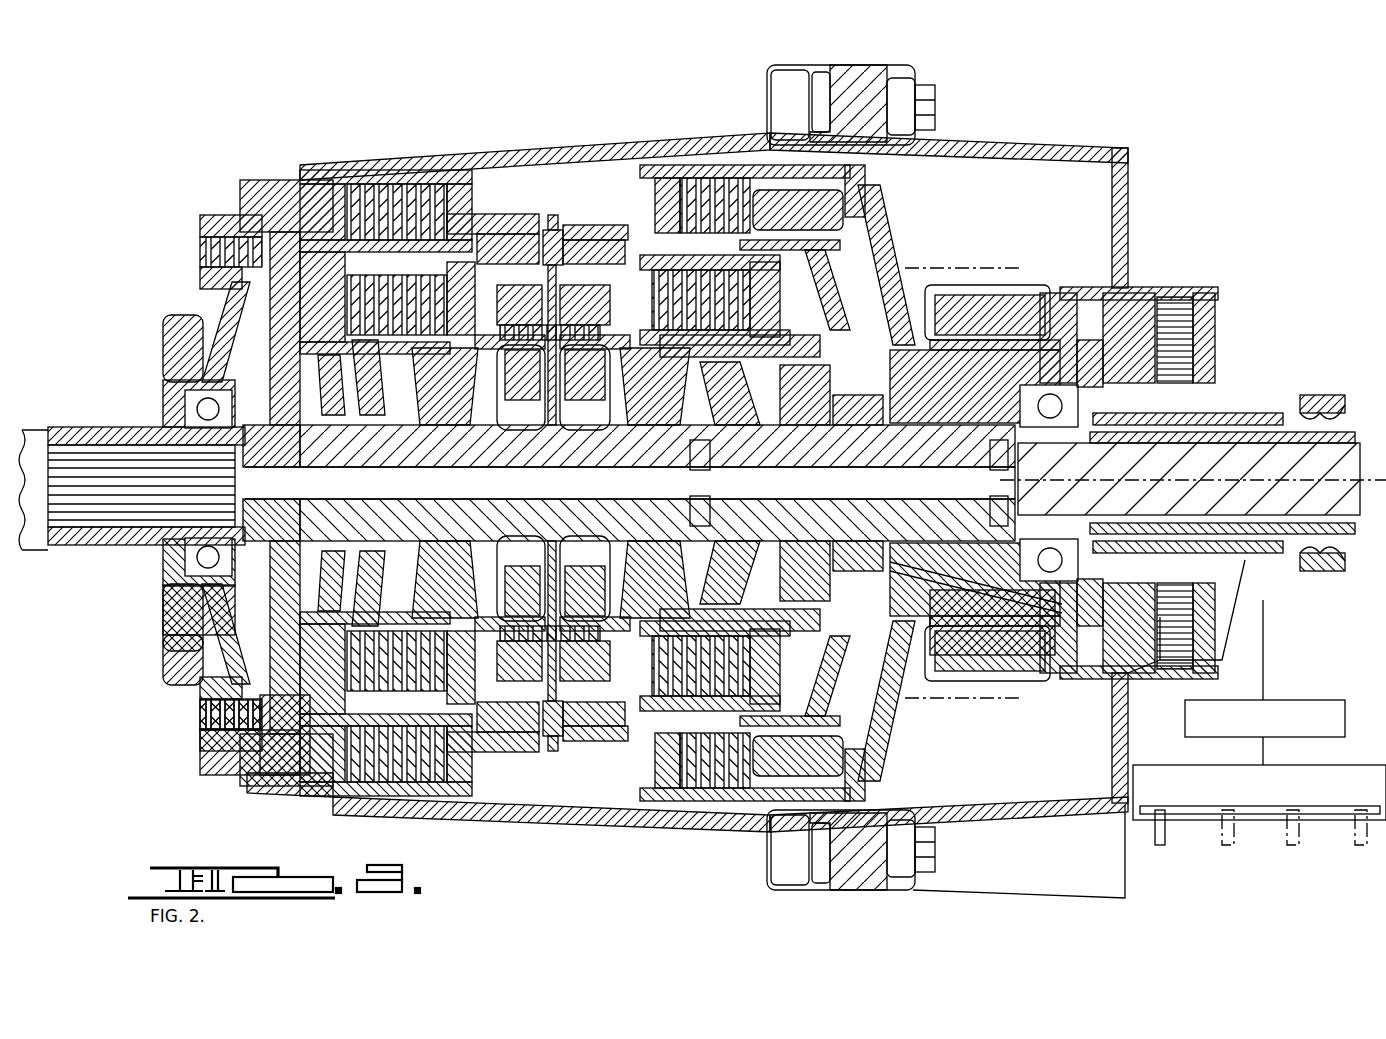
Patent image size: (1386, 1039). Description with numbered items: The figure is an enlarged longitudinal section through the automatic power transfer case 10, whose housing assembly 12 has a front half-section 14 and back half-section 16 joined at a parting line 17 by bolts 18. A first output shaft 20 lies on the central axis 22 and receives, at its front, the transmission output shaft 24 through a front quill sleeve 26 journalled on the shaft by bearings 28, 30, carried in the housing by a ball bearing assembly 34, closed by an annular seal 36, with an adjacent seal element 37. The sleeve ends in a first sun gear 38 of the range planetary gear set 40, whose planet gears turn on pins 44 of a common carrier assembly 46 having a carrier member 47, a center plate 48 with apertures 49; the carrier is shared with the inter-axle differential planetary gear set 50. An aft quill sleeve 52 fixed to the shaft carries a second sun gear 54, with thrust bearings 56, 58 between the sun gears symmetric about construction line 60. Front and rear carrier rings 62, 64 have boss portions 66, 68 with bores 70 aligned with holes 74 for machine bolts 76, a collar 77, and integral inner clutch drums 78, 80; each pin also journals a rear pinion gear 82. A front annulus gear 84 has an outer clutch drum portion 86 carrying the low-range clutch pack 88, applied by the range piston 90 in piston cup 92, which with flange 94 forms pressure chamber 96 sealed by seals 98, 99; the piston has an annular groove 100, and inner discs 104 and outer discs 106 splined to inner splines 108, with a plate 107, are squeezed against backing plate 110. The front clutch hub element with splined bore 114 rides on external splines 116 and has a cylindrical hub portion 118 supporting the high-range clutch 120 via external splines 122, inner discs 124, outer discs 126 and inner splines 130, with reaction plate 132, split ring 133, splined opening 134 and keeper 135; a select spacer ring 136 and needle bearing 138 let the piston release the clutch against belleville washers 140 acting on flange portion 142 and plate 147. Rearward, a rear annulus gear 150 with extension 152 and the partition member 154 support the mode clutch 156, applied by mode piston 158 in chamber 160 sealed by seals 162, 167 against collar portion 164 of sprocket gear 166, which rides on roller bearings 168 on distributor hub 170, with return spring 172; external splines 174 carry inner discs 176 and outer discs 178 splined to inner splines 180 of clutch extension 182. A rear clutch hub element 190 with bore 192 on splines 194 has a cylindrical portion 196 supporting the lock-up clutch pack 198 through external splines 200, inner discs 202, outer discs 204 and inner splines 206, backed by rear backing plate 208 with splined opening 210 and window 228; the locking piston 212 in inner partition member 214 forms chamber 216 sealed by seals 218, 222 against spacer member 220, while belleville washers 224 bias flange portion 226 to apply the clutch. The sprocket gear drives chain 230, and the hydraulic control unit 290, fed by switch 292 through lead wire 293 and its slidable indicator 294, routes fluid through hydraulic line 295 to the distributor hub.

The automatic power transfer case 10 is at (690, 72).
The housing assembly 12 is at (626, 128).
The front half-section 14 is at (470, 160).
The back half-section 16 is at (1033, 150).
The parting line 17 is at (862, 70).
The bolts 18 is at (935, 90).
The first output shaft 20 is at (1340, 448).
The central axis 22 is at (1345, 540).
The transmission output shaft 24 is at (40, 425).
The front quill sleeve 26 is at (82, 430).
The bearing 28 is at (323, 483).
The bearing 30 is at (505, 483).
The ball bearing assembly 34 is at (210, 372).
The annular seal 36 is at (185, 401).
The seal 37 is at (180, 330).
The first sun gear 38 is at (527, 393).
The front high-low range planetary helical gear set 40 is at (546, 764).
The pin 44 is at (580, 722).
The carrier assembly 46 is at (560, 732).
The actuator sleeve 47 is at (512, 740).
The center plate 48 is at (545, 640).
The apertures 49 is at (520, 668).
The second inter-axle differential planetary gear set 50 is at (614, 756).
The aft quill sleeve 52 is at (622, 483).
The second sun gear 54 is at (573, 393).
The thrust bearing 56 is at (537, 483).
The thrust bearing 58 is at (573, 483).
The dashed construction line 60 is at (535, 836).
The front carrier ring 62 is at (506, 462).
The rear carrier ring 64 is at (591, 462).
The boss portions 66 is at (475, 330).
The boss portions 68 is at (627, 327).
The bores 70 is at (498, 300).
The holes 74 is at (582, 310).
The machine bolts 76 is at (628, 297).
The collar 77 is at (583, 290).
The inner clutch drum 78 is at (300, 276).
The inner clutch drum 80 is at (752, 290).
The rear pinion gear 82 is at (600, 700).
The front annulus gear 84 is at (560, 222).
The outer clutch drum portion 86 is at (205, 250).
The low-range wet clutch pack 88 is at (549, 218).
The high/low range piston 90 is at (340, 182).
The piston cup 92 is at (248, 200).
The inner annular housing flange 94 is at (245, 408).
The range hydraulic pressure chamber 96 is at (195, 308).
The range piston outer annular seal 98 is at (282, 185).
The inner annular seal 99 is at (200, 340).
The annular groove 100 is at (306, 200).
The inner clutch discs 104 is at (470, 184).
The outer companion clutch discs 106 is at (378, 180).
The plate 107 is at (479, 225).
The inner splines 108 is at (425, 165).
The backing plate 110 is at (465, 196).
The central internally splined bore 114 is at (369, 483).
The external splines 116 is at (402, 483).
The cylindrical hub portion 118 is at (360, 300).
The high range clutch means 120 is at (225, 300).
The external splines 122 is at (228, 560).
The inner discs 124 is at (300, 640).
The outer companion discs 126 is at (512, 705).
The inner splines 130 is at (450, 732).
The front clutch reaction pressure plate 132 is at (282, 420).
The split ring 133 is at (125, 510).
The central internally splined opening 134 is at (320, 440).
The split ring keeper 135 is at (172, 600).
The select spacer ring 136 is at (215, 650).
The needle bearing assembly 138 is at (222, 665).
The front belleville return spring washers 140 is at (469, 483).
The front hub backing radial pressure flange portion 142 is at (357, 540).
The plate 147 is at (500, 640).
The rear annulus gear 150 is at (600, 226).
The rearward annulus extension 152 is at (670, 240).
The outer shell-like cylindrical drum partition member 154 is at (830, 185).
The two-wheel/four-wheel mode clutch means 156 is at (683, 210).
The mode piston 158 is at (860, 245).
The four-wheel drive mode hydraulic pressure chamber 160 is at (872, 220).
The mode piston outer annular seal 162 is at (880, 190).
The collar portion 164 is at (905, 425).
The sprocket gear 166 is at (1043, 290).
The inner annular seal 167 is at (959, 385).
The roller bearings 168 is at (980, 352).
The hydraulic fluid distributor stator member 170 is at (960, 600).
The return spring 172 is at (835, 260).
The external splines 174 is at (770, 245).
The inner annular discs 176 is at (760, 215).
The outer annular discs 178 is at (770, 190).
The inner splines 180 is at (760, 165).
The annular clutch extension 182 is at (705, 175).
The rear clutch hub element 190 is at (742, 483).
The central internally splined bore 192 is at (699, 483).
The external splines 194 is at (672, 455).
The cylindrical portion 196 is at (790, 332).
The interaxle differential lock-up clutch pack 198 is at (750, 655).
The external splines 200 is at (717, 484).
The inner clutch discs 202 is at (750, 640).
The outer companion clutch discs 204 is at (750, 670).
The inner splines 206 is at (787, 748).
The rear backing plate 208 is at (804, 455).
The central internally splined opening 210 is at (779, 483).
The differential clutch control locking piston 212 is at (860, 670).
The inner shell-like partition member 214 is at (870, 650).
The hydraulic pressure chamber 216 is at (880, 630).
The locking piston outer annular seal 218 is at (830, 765).
The annular spacer member 220 is at (871, 483).
The inner annular seal 222 is at (762, 592).
The rear belleville return spring washers 224 is at (611, 458).
The rear hub backing radial flange portion 226 is at (589, 482).
The window 228 is at (824, 483).
The chain 230 is at (1015, 258).
The hydraulic control unit 290 is at (1312, 698).
The switch 292 is at (1372, 765).
The lead wire 293 is at (1261, 748).
The slidable indicator 294 is at (1165, 845).
The hydraulic line 295 is at (1265, 612).